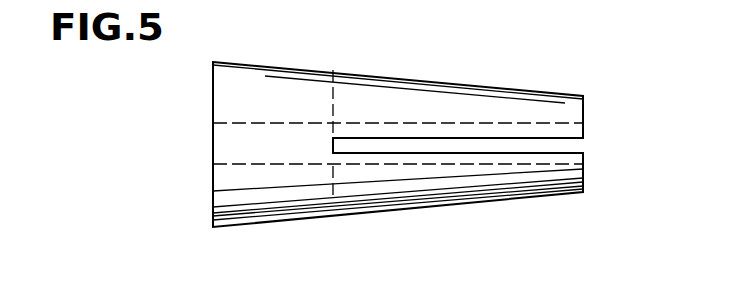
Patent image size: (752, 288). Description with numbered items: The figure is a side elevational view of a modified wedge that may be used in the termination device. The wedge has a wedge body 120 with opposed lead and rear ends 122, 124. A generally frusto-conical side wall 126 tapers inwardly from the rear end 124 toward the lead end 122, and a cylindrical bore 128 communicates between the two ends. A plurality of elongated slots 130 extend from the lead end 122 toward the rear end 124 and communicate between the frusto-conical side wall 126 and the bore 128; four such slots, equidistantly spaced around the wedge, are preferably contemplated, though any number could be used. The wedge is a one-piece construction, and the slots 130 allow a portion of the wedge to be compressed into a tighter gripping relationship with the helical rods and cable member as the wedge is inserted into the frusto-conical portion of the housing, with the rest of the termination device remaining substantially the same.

The wedge body 120 is at (383, 77).
The lead end 122 is at (583, 118).
The rear end 124 is at (213, 111).
The frusto-conical side wall 126 is at (260, 86).
The cylindrical bore 128 is at (262, 158).
The elongated slots 130 is at (527, 149).